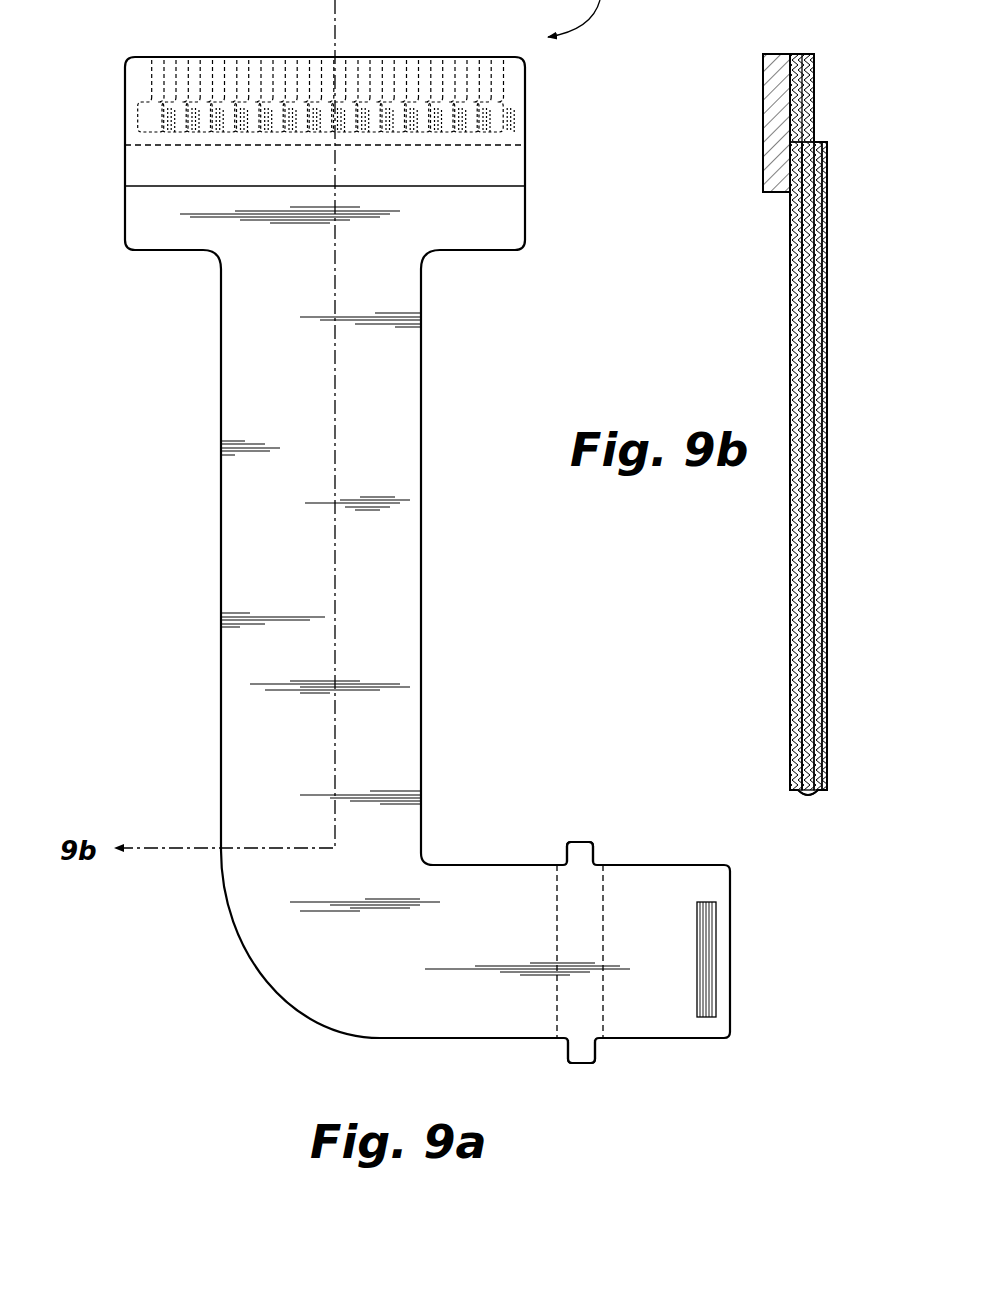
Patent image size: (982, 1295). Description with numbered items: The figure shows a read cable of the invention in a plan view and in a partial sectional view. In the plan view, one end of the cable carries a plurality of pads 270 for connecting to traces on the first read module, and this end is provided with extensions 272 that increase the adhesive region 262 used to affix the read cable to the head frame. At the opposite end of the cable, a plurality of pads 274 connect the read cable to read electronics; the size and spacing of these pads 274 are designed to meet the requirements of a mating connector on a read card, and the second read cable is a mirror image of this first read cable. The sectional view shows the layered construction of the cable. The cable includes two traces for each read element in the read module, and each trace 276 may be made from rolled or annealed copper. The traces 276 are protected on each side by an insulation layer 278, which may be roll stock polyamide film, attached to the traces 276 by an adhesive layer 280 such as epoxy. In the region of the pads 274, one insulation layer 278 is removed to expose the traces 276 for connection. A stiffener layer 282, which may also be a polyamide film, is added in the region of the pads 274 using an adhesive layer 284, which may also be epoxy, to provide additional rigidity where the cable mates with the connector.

In FIG. 9A, the adhesive region 262 is at (557, 935).
In FIG. 9A, the pads 270 is at (706, 1043).
In FIG. 9A, the extensions 272 is at (580, 841).
In FIG. 9A, the pads 274 is at (113, 113).
In FIG. 9B, the trace 276 is at (815, 86).
In FIG. 9B, the insulation layer 278 is at (790, 560).
In FIG. 9B, the adhesive layer 280 is at (800, 796).
In FIG. 9B, the stiffener layer 282 is at (763, 145).
In FIG. 9B, the adhesive layer 284 is at (787, 193).